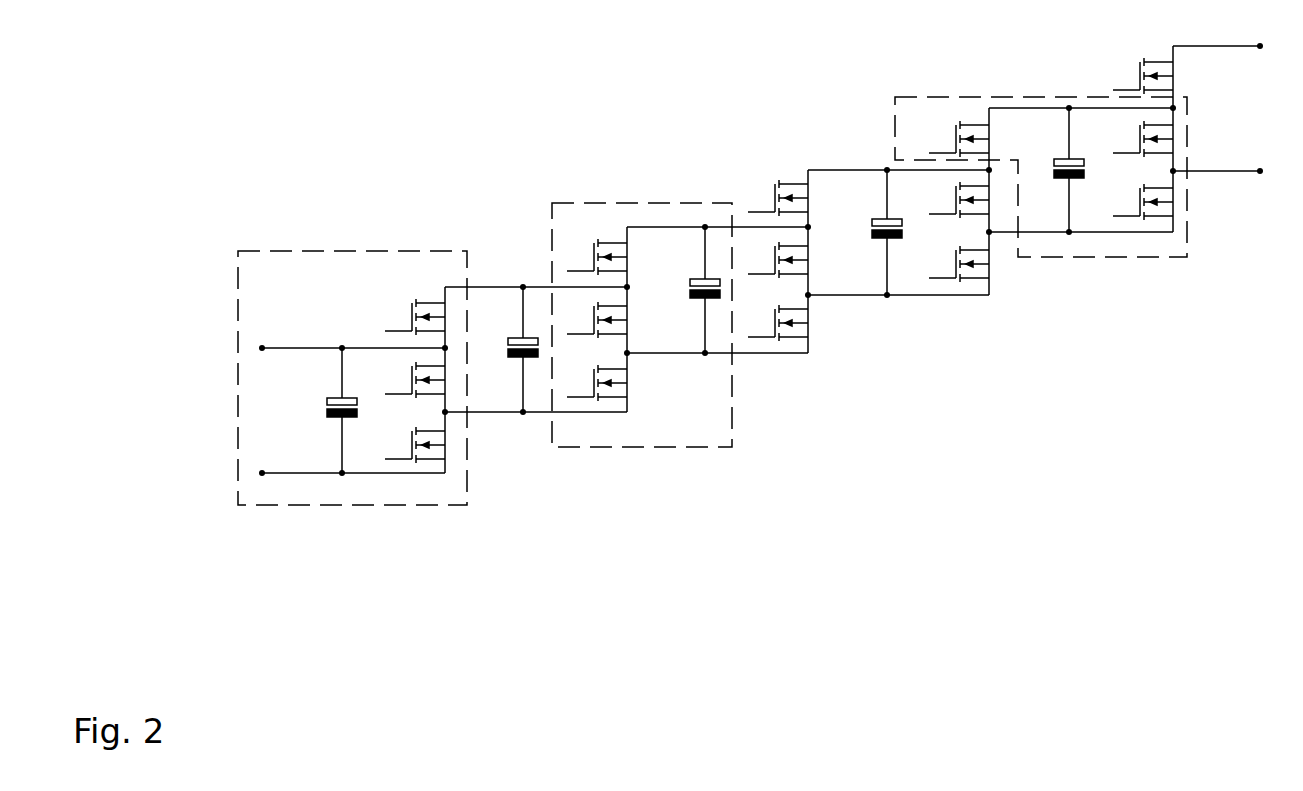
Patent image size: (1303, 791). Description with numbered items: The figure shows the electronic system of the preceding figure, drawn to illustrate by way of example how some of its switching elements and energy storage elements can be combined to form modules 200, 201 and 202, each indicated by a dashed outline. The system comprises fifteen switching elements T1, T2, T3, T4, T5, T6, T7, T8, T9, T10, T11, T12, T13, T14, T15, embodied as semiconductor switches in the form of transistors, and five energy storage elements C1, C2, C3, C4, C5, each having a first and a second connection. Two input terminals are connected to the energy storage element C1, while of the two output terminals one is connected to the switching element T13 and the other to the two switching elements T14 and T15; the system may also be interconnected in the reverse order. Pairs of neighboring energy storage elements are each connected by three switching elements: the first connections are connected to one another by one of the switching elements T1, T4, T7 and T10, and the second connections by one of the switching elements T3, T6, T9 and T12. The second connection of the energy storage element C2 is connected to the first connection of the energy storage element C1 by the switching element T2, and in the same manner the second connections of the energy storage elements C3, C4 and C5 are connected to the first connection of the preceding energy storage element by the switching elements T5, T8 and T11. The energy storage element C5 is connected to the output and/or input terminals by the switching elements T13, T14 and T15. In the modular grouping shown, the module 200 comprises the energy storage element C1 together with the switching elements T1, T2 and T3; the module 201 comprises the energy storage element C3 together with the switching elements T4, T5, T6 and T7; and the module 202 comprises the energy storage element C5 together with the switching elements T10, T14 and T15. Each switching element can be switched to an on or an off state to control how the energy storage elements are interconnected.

The switching element T1 is at (411, 312).
The switching element T2 is at (411, 375).
The switching element T3 is at (411, 440).
The switching element T4 is at (593, 252).
The switching element T5 is at (593, 315).
The switching element T6 is at (593, 378).
The switching element T7 is at (774, 193).
The switching element T8 is at (774, 255).
The switching element T9 is at (774, 318).
The switching element T10 is at (948, 134).
The switching element T11 is at (948, 195).
The switching element T12 is at (948, 259).
The switching element T13 is at (1132, 72).
The switching element T14 is at (1132, 134).
The switching element T15 is at (1132, 198).
The energy storage element C1 is at (327, 410).
The energy storage element C2 is at (509, 349).
The energy storage element C3 is at (690, 290).
The energy storage element C4 is at (872, 232).
The energy storage element C5 is at (1055, 170).
The module 200 is at (378, 505).
The module 201 is at (638, 447).
The module 202 is at (1093, 257).